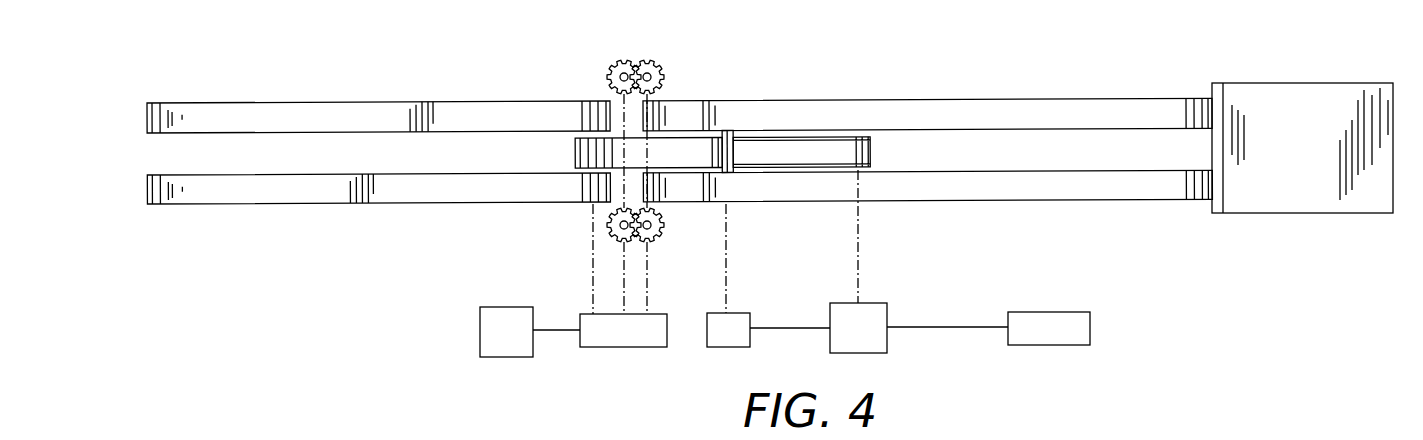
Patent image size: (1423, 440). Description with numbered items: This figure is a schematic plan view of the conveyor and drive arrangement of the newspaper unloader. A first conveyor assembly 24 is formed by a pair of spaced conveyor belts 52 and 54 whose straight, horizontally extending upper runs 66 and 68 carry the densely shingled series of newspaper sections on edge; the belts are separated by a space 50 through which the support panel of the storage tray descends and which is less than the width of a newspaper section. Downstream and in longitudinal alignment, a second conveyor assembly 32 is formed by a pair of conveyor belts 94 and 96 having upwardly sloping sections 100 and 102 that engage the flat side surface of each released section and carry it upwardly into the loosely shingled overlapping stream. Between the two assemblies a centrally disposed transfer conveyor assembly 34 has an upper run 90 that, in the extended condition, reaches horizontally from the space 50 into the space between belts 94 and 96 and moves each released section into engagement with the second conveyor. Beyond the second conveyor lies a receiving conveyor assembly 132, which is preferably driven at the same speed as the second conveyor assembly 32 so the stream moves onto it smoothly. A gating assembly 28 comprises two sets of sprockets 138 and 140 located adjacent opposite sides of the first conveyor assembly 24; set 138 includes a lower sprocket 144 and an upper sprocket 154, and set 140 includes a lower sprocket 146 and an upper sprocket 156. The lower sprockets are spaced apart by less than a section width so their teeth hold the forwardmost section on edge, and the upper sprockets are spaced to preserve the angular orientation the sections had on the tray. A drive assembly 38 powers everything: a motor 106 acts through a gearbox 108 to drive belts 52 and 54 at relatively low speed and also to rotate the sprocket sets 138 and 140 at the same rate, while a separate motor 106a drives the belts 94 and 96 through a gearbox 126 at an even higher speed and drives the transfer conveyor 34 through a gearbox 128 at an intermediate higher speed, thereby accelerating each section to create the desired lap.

The first conveyor assembly 24 is at (395, 93).
The conveyor belt 52 is at (293, 108).
The upper run 66 is at (438, 131).
The conveyor belt 54 is at (313, 193).
The upper run 68 is at (403, 195).
The space 50 is at (310, 150).
The transfer conveyor assembly 34 is at (568, 162).
The upwardly sloping section 100 is at (677, 110).
The upwardly sloping section 102 is at (668, 195).
The conveyor belt 94 is at (1078, 110).
The second conveyor assembly 32 is at (1001, 96).
The conveyor belt 96 is at (1057, 188).
The upper run 90 is at (768, 155).
The receiving conveyor assembly 132 is at (1287, 200).
The set of sprockets 138 is at (614, 62).
The lower sprocket 144 is at (612, 80).
The gating assembly 28 is at (652, 60).
The upper sprocket 154 is at (655, 78).
The set of sprockets 140 is at (610, 236).
The lower sprocket 146 is at (620, 237).
The upper sprocket 156 is at (652, 240).
The motor 106 is at (497, 347).
The gearbox 108 is at (608, 337).
The gearbox 126 is at (738, 342).
The gearbox 128 is at (877, 348).
The drive assembly 38 is at (905, 300).
The motor 106a is at (1072, 312).